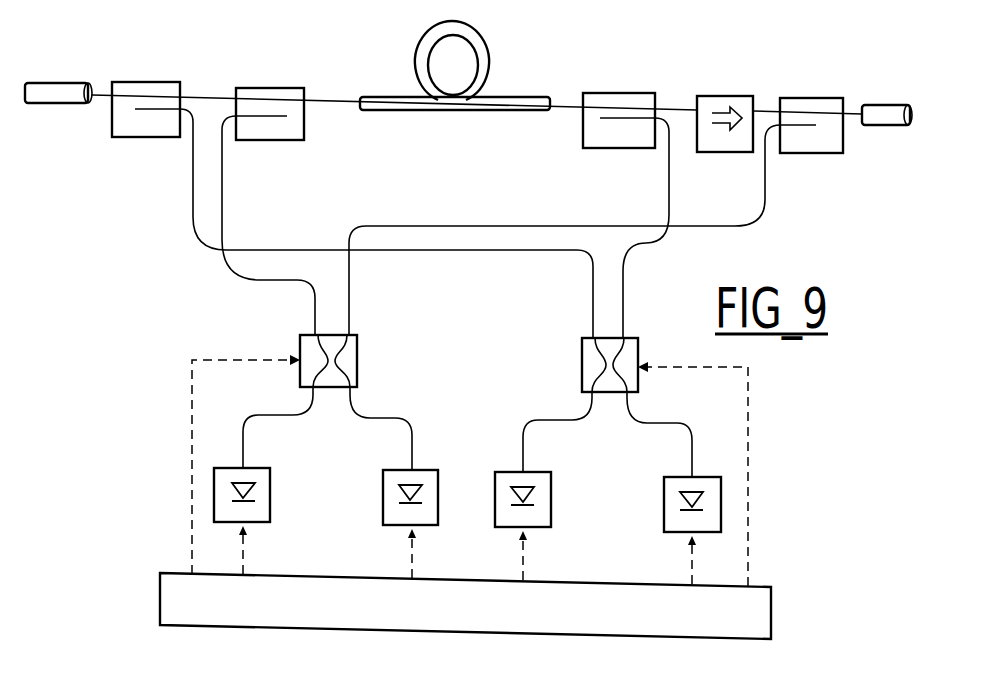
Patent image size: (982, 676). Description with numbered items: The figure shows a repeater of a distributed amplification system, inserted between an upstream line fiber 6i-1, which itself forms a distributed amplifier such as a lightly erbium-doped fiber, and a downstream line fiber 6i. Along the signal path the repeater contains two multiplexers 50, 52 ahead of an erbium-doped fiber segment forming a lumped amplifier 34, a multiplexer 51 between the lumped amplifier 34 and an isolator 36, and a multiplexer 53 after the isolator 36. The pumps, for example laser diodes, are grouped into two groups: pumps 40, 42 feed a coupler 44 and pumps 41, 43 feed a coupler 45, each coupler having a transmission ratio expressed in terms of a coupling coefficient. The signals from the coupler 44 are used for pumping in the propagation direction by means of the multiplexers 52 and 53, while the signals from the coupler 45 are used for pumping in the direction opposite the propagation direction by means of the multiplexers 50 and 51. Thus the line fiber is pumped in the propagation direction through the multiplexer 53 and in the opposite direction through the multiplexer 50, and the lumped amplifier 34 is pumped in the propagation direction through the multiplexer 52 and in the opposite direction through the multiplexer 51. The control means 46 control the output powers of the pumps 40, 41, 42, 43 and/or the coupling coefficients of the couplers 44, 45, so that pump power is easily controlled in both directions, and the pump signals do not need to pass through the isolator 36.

The line fiber 6i-1 is at (57, 83).
The line fiber 6i is at (885, 106).
The multiplexer 50 is at (140, 82).
The multiplexer 52 is at (265, 88).
The lumped amplifier 34 is at (490, 48).
The multiplexer 51 is at (620, 93).
The isolator 36 is at (726, 96).
The multiplexer 53 is at (810, 98).
The coupler 44 is at (358, 346).
The coupler 45 is at (582, 352).
The pump 40 is at (214, 488).
The pump 41 is at (551, 493).
The pump 42 is at (438, 485).
The pump 43 is at (721, 498).
The control means 46 is at (771, 610).